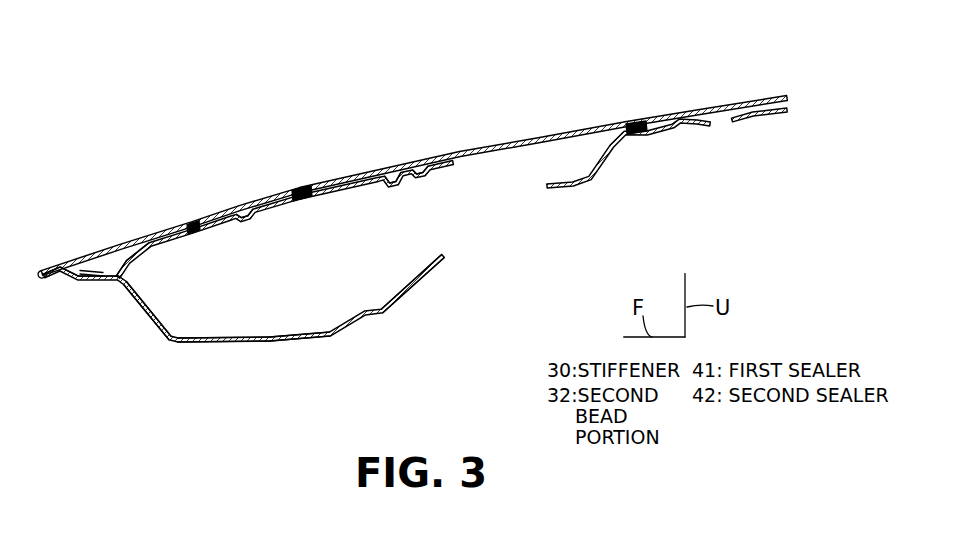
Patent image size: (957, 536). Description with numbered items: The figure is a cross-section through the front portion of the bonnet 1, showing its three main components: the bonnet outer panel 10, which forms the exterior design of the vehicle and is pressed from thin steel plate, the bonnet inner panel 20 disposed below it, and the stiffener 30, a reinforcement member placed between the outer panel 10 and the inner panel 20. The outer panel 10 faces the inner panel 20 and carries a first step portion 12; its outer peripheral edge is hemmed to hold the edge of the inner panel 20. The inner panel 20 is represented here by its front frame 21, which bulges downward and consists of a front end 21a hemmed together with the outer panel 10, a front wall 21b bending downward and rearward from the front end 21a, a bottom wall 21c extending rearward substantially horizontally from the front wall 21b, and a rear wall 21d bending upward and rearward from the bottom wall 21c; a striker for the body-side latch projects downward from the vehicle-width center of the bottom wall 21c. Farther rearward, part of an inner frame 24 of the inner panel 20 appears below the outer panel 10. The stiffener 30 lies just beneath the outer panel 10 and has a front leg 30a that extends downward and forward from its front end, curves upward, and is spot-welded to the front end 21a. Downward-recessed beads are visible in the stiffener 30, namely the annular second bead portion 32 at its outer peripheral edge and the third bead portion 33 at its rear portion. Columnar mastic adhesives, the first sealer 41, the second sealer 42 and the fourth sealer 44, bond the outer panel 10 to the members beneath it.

The bonnet 1 is at (557, 72).
The bonnet outer panel 10 is at (395, 150).
The first step portion 12 is at (468, 152).
The bonnet inner panel 20 is at (328, 347).
The front frame 21 is at (199, 342).
The front end 21a is at (70, 279).
The front wall 21b is at (142, 313).
The bottom wall 21c is at (267, 341).
The rear wall 21d is at (415, 284).
The inner frame 24 is at (770, 112).
The stiffener 30 is at (342, 198).
The front leg 30a is at (128, 260).
The second bead portion 32 is at (242, 223).
The third bead portion 33 is at (392, 183).
The first sealer 41 is at (193, 230).
The second sealer 42 is at (305, 200).
The fourth sealer 44 is at (633, 133).